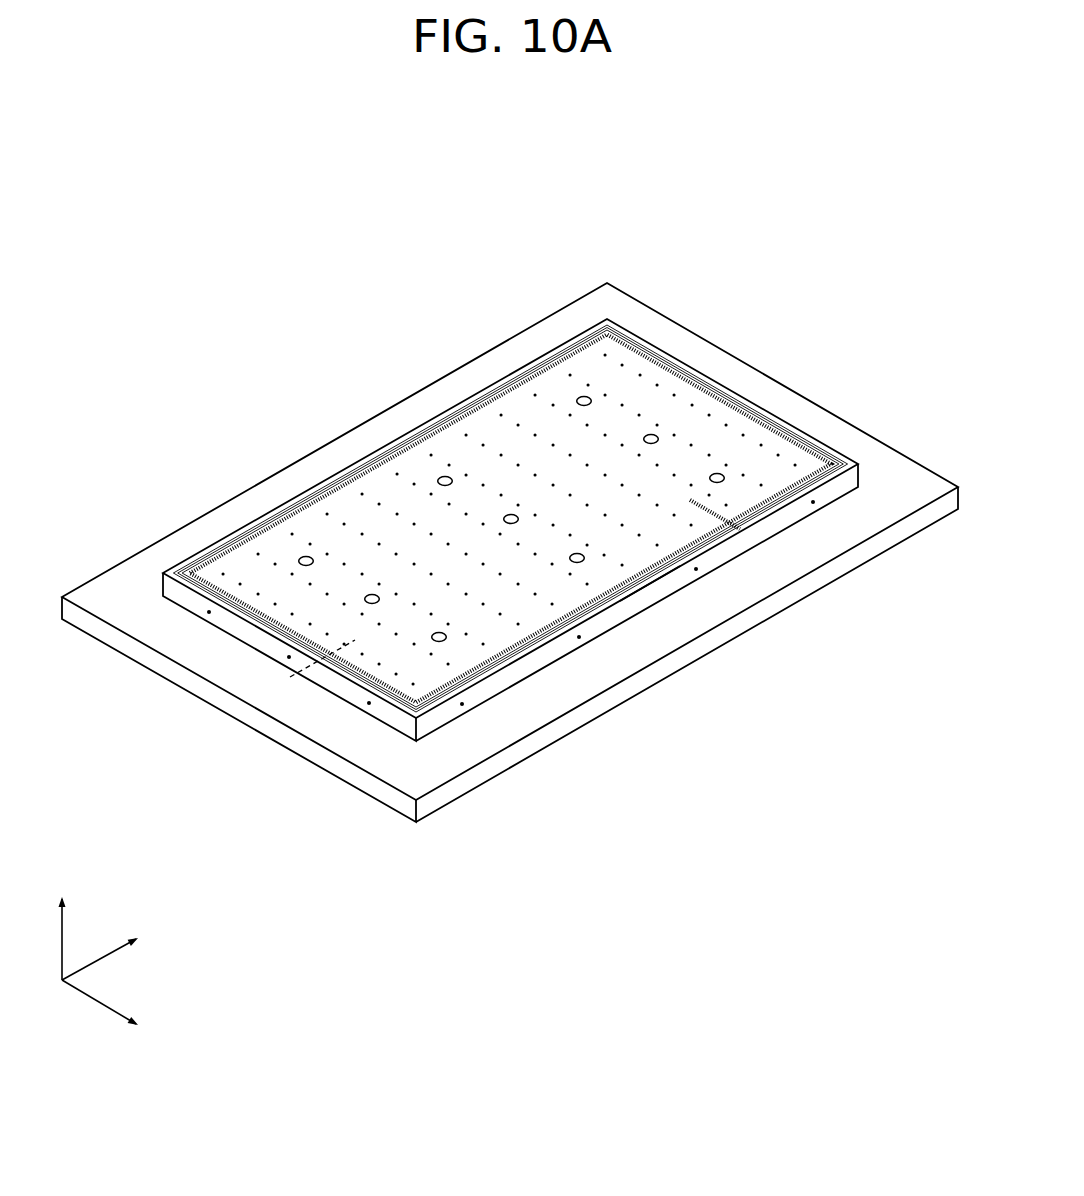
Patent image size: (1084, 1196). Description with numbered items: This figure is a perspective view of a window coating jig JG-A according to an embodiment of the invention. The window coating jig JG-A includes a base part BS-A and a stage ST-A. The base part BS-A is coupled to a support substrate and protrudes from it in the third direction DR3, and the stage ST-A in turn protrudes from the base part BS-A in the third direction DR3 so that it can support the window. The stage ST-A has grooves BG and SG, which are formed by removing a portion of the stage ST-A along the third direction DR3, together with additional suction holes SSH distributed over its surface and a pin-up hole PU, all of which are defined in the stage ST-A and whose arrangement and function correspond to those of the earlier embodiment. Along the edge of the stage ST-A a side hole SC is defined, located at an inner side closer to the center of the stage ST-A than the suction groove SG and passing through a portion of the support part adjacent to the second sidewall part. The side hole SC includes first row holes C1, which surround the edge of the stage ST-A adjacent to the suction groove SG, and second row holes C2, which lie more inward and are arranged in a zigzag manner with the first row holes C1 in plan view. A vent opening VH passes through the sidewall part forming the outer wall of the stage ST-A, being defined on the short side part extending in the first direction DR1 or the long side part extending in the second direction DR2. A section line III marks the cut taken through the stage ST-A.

The window coating jig JG-A is at (787, 301).
The base part BS-A is at (465, 783).
The stage ST-A is at (502, 678).
The side hole SC is at (510, 516).
The first row holes C1 is at (315, 498).
The second row holes C2 is at (373, 460).
The suction groove SG is at (707, 538).
The groove BG is at (650, 582).
The additional suction holes SSH is at (520, 425).
The pin-up hole PU is at (585, 398).
The vent opening VH is at (579, 637).
The section line III-III' III is at (289, 678).
The first direction DR1 is at (122, 1014).
The second direction DR2 is at (122, 948).
The third direction DR3 is at (62, 923).